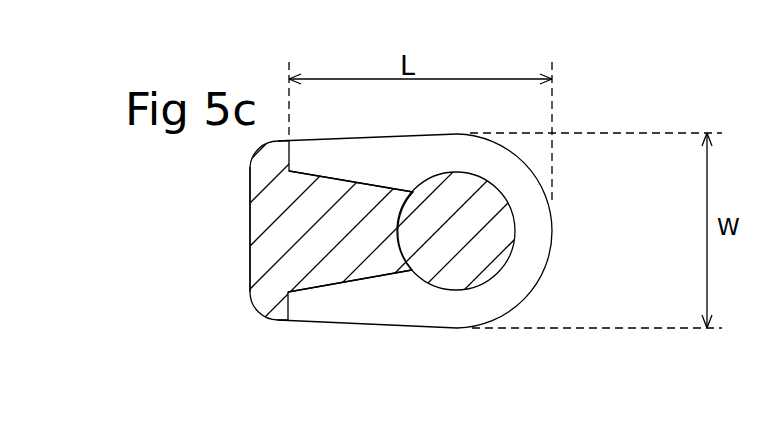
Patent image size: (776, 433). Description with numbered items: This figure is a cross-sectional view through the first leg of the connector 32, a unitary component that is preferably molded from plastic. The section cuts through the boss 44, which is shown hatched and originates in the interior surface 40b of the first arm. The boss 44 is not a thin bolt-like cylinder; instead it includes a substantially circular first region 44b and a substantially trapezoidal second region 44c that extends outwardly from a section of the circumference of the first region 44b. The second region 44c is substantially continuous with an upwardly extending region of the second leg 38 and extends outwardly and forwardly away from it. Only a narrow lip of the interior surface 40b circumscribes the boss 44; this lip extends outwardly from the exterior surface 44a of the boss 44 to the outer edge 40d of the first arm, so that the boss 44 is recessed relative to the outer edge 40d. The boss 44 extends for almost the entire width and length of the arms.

The connector 32 is at (458, 221).
The second leg 38 is at (252, 265).
The interior surface of first arm 40b is at (525, 277).
The outer edge of first arm 40d is at (538, 178).
The boss 44 is at (458, 221).
The exterior surface of boss 44a is at (368, 270).
The first region of boss 44b is at (485, 235).
The second region of boss 44c is at (332, 209).